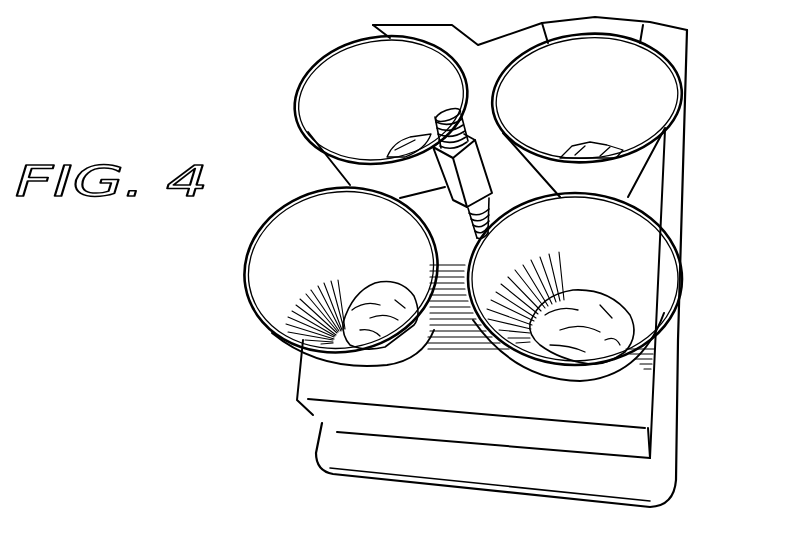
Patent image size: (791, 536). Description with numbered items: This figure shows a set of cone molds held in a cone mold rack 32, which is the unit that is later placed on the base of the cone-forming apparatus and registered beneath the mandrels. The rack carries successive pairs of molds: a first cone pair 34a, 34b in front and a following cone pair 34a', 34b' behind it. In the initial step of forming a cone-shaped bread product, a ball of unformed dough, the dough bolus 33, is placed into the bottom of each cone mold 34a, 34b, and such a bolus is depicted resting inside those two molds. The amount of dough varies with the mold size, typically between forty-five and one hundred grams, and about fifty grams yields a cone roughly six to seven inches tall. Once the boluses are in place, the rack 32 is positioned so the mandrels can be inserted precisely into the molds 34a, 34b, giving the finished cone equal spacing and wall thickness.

The cone mold rack 32 is at (313, 415).
The dough bolus 33 is at (275, 327).
The cone mold 34a is at (341, 269).
The cone mold 34b is at (575, 287).
The cone mold 34a' is at (380, 110).
The cone mold 34b' is at (587, 111).